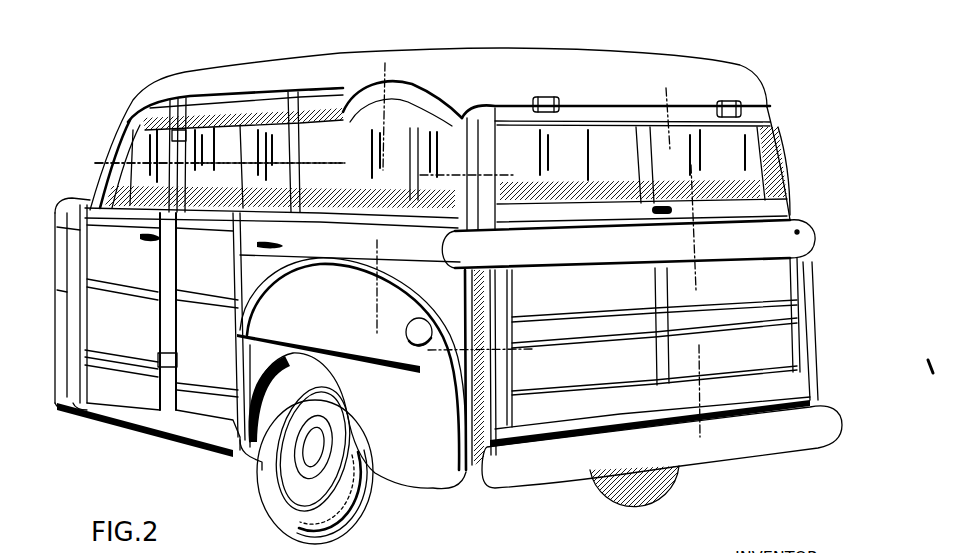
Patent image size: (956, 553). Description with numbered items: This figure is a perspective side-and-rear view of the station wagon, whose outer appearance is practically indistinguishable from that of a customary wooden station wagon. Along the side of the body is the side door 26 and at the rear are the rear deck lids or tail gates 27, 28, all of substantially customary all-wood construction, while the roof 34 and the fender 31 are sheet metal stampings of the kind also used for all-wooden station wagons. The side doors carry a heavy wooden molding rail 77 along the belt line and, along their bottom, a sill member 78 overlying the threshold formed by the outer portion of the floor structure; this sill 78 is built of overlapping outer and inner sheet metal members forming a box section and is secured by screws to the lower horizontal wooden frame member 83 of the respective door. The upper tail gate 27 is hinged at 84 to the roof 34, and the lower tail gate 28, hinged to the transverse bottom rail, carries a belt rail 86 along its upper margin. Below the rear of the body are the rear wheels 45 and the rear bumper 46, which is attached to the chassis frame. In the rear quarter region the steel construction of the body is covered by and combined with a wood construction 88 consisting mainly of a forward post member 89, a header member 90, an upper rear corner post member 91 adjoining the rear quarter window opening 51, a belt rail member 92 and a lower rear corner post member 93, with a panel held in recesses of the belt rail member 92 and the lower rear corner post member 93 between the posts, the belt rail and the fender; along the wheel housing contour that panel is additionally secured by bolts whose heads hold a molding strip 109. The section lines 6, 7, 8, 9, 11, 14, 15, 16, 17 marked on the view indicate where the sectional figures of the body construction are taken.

The section line 6- 6 is at (100, 150).
The section line 7- 7 is at (202, 140).
The section line 8- 8 is at (270, 157).
The section line 9- 9 is at (427, 168).
The section line 11- 11 is at (433, 345).
The section line 14- 14 is at (392, 73).
The section line 15- 15 is at (676, 95).
The section line 16- 16 is at (699, 172).
The section line 17- 17 is at (690, 358).
The side door 26 is at (215, 392).
The rear deck lid 27 is at (680, 118).
The tail gate 28 is at (670, 400).
The fender 31 is at (440, 478).
The roof 34 is at (266, 66).
The rear wheels 45 is at (641, 500).
The rear bumper 46 is at (523, 482).
The rear quarter window opening 51 is at (408, 138).
The wooden molding rail 77 is at (110, 232).
The sill member 78 is at (170, 413).
The lower horizontal wooden frame member 83 is at (100, 368).
The hinge 84 is at (551, 97).
The belt rail 86 is at (754, 250).
The wood construction 88 is at (400, 107).
The forward post member 89 is at (305, 100).
The header member 90 is at (333, 100).
The upper rear corner post member 91 is at (480, 128).
The belt rail member 92 is at (343, 266).
The lower rear corner post member 93 is at (474, 375).
The molding strip 109 is at (424, 318).